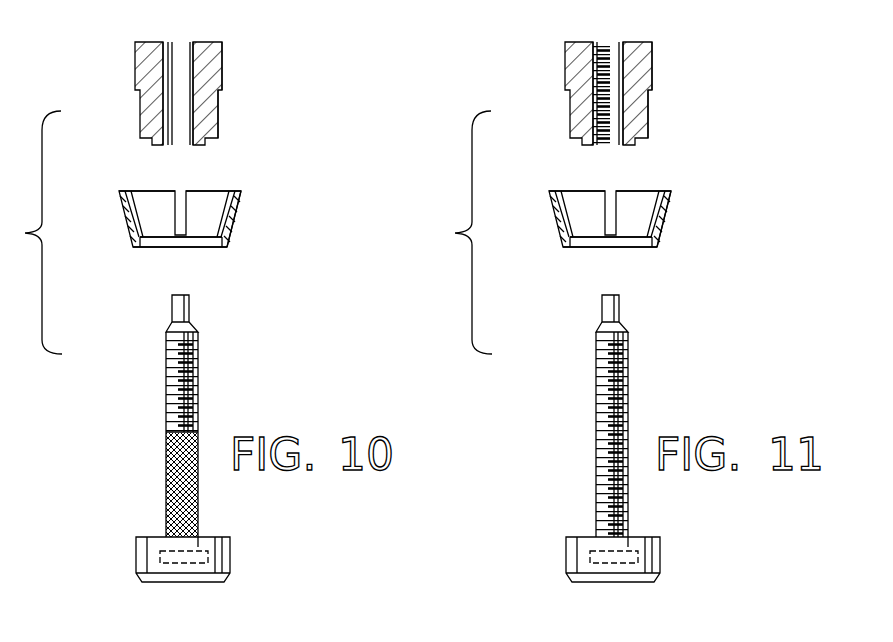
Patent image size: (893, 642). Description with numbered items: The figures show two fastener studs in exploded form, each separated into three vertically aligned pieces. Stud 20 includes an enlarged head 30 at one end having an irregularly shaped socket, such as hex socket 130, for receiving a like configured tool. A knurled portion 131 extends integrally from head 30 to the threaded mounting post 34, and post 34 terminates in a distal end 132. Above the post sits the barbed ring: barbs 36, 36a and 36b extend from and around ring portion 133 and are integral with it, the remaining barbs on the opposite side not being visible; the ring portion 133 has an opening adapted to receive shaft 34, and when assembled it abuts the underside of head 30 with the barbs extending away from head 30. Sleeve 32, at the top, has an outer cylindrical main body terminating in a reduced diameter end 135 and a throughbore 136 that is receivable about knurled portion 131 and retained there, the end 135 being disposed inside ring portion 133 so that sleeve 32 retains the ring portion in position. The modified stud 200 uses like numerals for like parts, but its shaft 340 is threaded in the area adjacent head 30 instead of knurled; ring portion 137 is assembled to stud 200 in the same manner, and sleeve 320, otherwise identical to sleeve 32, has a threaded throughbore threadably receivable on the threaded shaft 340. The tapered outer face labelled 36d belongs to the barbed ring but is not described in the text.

In FIG. 10, the fastener stud 20 is at (97, 83).
In FIG. 11, the modified stud 200 is at (595, 311).
In FIG. 10, the enlarged head 30 is at (136, 553).
In FIG. 11, the enlarged head 30 is at (602, 573).
In FIG. 10, the sleeve 32 is at (146, 40).
In FIG. 11, the sleeve 320 is at (615, 74).
In FIG. 10, the threaded mounting post 34 is at (166, 355).
In FIG. 11, the threaded shaft 340 is at (613, 410).
In FIG. 10, the barb 36 is at (126, 220).
In FIG. 11, the barb 36 is at (618, 216).
In FIG. 10, the barb 36a is at (158, 190).
In FIG. 11, the barb 36a is at (561, 172).
In FIG. 10, the barb 36b is at (200, 190).
In FIG. 11, the barb 36b is at (662, 172).
In FIG. 10, the collet tapered outer surface 36d is at (237, 214).
In FIG. 11, the collet tapered outer surface 36d is at (696, 219).
In FIG. 10, the hex socket 130 is at (196, 586).
In FIG. 11, the hex socket 130 is at (641, 584).
In FIG. 10, the knurled portion 131 is at (166, 462).
In FIG. 11, the knurled portion 131 is at (584, 437).
In FIG. 10, the distal end 132 is at (190, 306).
In FIG. 11, the distal end 132 is at (646, 303).
In FIG. 10, the ring portion 133 is at (150, 249).
In FIG. 11, the ring portion 133 is at (587, 263).
In FIG. 10, the reduced diameter end 135 is at (218, 120).
In FIG. 11, the reduced diameter end 135 is at (684, 114).
In FIG. 10, the throughbore 136 is at (187, 46).
In FIG. 11, the ring portion 137 is at (633, 75).